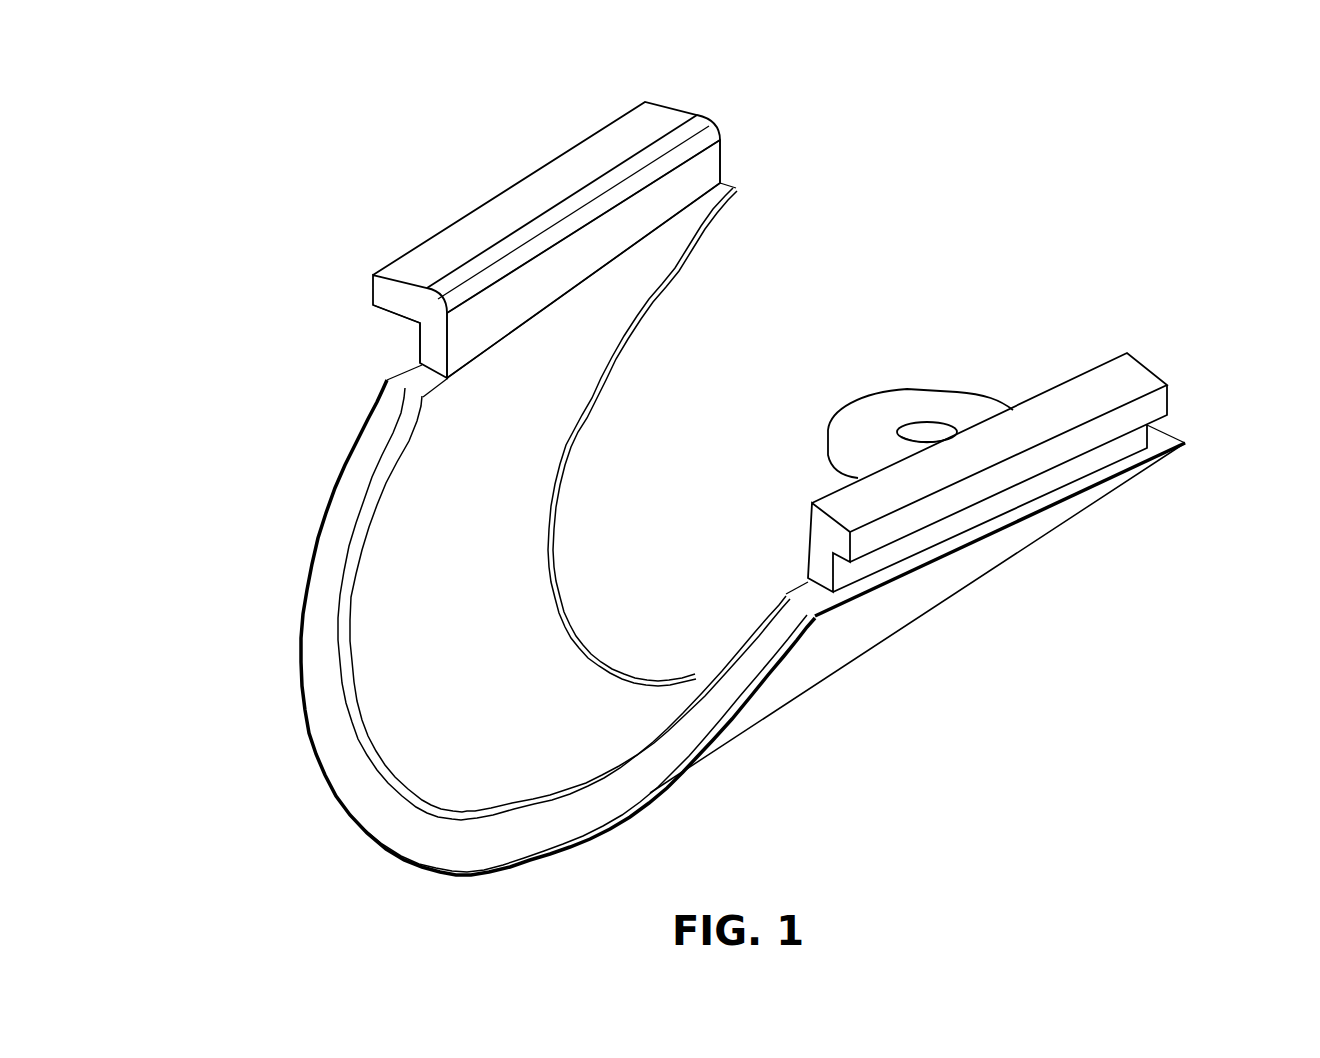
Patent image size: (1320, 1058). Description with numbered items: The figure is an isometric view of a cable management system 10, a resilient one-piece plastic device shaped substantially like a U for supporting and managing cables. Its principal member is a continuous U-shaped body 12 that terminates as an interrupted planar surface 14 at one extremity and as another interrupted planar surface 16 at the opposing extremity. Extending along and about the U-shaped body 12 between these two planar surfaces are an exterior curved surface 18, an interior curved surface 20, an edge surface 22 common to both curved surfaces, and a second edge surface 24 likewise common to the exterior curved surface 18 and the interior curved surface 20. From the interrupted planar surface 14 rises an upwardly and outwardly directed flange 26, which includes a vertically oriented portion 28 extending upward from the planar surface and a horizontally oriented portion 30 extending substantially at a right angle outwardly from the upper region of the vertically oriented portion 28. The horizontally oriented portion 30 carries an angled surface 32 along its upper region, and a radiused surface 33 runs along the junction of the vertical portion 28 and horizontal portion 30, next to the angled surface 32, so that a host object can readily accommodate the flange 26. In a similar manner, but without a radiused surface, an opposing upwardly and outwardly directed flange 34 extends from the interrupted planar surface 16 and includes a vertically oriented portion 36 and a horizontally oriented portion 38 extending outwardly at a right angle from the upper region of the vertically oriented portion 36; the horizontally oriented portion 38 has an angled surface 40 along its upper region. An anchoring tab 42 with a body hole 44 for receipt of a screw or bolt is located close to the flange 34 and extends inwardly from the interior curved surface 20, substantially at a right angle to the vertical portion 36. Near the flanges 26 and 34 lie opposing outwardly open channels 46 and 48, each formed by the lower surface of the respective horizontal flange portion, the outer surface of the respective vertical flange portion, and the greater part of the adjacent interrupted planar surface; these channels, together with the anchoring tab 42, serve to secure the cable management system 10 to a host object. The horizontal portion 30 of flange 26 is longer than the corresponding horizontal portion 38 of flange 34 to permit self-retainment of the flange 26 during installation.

The cable management system 10 is at (1053, 165).
The U-shaped body 12 is at (351, 843).
The interrupted planar surface 14 is at (555, 578).
The interrupted planar surface 16 is at (945, 520).
The exterior curved surface 18 is at (917, 618).
The interior curved surface 20 is at (638, 436).
The edge surface 22 is at (503, 627).
The edge surface 24 is at (642, 434).
The flange 26 is at (727, 107).
The vertically oriented portion 28 is at (607, 259).
The horizontally oriented portion 30 is at (361, 322).
The angled surface 32 is at (546, 240).
The radiused surface 33 is at (615, 219).
The flange 34 is at (1168, 351).
The vertically oriented portion 36 is at (783, 547).
The horizontally oriented portion 38 is at (1003, 521).
The angled surface 40 is at (989, 419).
The anchoring tab 42 is at (919, 397).
The body hole 44 is at (970, 379).
The channel 46 is at (377, 331).
The channel 48 is at (1025, 507).